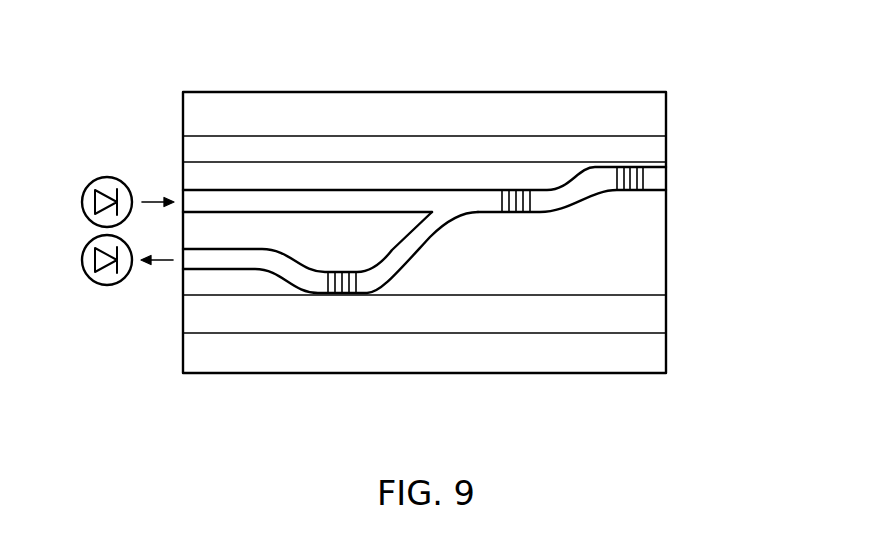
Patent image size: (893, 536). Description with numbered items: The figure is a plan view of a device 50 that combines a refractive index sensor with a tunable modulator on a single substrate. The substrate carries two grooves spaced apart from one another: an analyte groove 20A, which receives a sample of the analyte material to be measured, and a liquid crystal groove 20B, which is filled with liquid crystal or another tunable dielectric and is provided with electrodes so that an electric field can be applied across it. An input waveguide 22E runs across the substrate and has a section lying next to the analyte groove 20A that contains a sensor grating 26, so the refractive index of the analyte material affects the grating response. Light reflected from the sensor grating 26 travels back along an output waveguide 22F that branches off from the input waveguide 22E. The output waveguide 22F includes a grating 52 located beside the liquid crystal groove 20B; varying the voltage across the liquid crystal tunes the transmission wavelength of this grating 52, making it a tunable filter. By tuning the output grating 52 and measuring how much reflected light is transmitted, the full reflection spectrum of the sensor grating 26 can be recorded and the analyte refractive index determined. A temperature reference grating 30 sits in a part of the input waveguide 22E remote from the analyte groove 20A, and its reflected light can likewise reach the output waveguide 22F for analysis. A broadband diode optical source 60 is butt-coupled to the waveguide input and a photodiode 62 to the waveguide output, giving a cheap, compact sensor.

The device 50 is at (669, 77).
The analyte groove 20A is at (660, 150).
The liquid crystal groove 20B is at (660, 318).
The input waveguide 22E is at (230, 203).
The output waveguide 22F is at (390, 268).
The grating 26 is at (645, 177).
The temperature reference grating 30 is at (520, 212).
The grating 52 is at (337, 295).
The broadband diode optical source 60 is at (82, 200).
The photodiode 62 is at (82, 262).